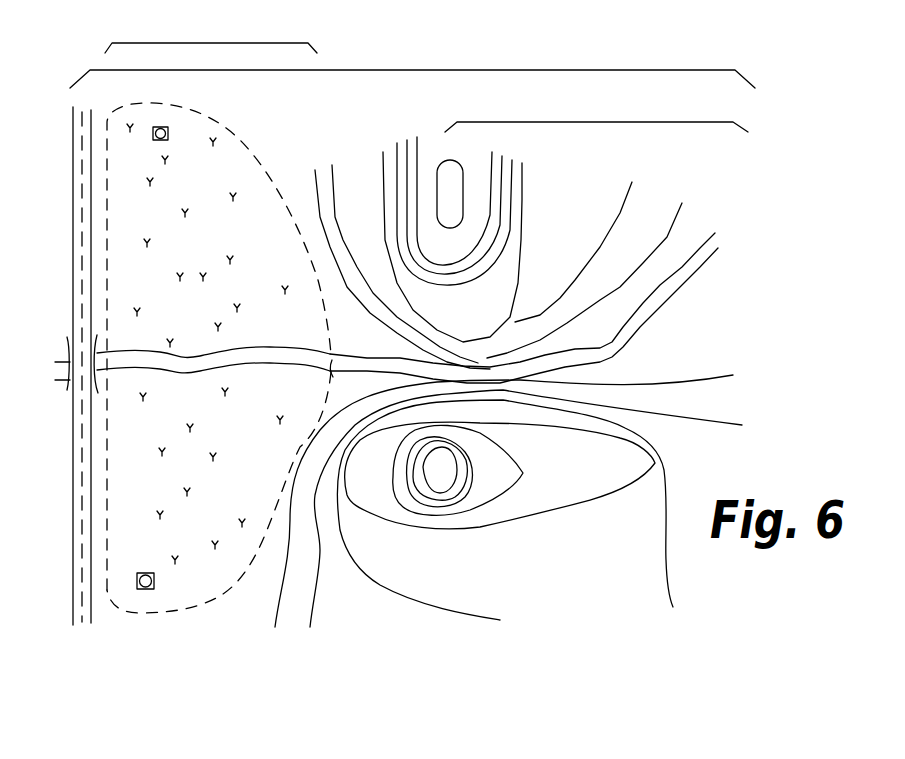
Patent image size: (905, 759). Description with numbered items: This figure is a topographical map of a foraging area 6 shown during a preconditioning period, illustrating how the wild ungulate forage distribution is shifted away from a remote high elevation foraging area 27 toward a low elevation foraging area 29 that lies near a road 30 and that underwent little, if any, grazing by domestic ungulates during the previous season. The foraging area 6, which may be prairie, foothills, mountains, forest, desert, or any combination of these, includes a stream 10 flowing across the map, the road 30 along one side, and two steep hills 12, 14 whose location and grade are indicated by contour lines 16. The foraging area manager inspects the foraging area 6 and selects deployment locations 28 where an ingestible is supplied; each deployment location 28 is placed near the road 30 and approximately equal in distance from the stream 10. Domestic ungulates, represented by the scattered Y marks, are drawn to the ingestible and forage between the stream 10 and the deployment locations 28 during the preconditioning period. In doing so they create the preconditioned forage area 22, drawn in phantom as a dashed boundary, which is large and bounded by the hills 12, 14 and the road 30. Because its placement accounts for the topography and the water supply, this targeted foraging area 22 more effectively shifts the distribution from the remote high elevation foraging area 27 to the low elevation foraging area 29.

The foraging area 6 is at (415, 70).
The stream 10 is at (266, 353).
The steep hill 12 is at (418, 253).
The steep hill 14 is at (508, 501).
The contour lines 16 is at (507, 191).
The preconditioned forage area 22 is at (238, 138).
The remote high elevation foraging area 27 is at (603, 122).
The deployment location 28 is at (168, 138).
The low elevation foraging area 29 is at (213, 43).
The road 30 is at (71, 434).